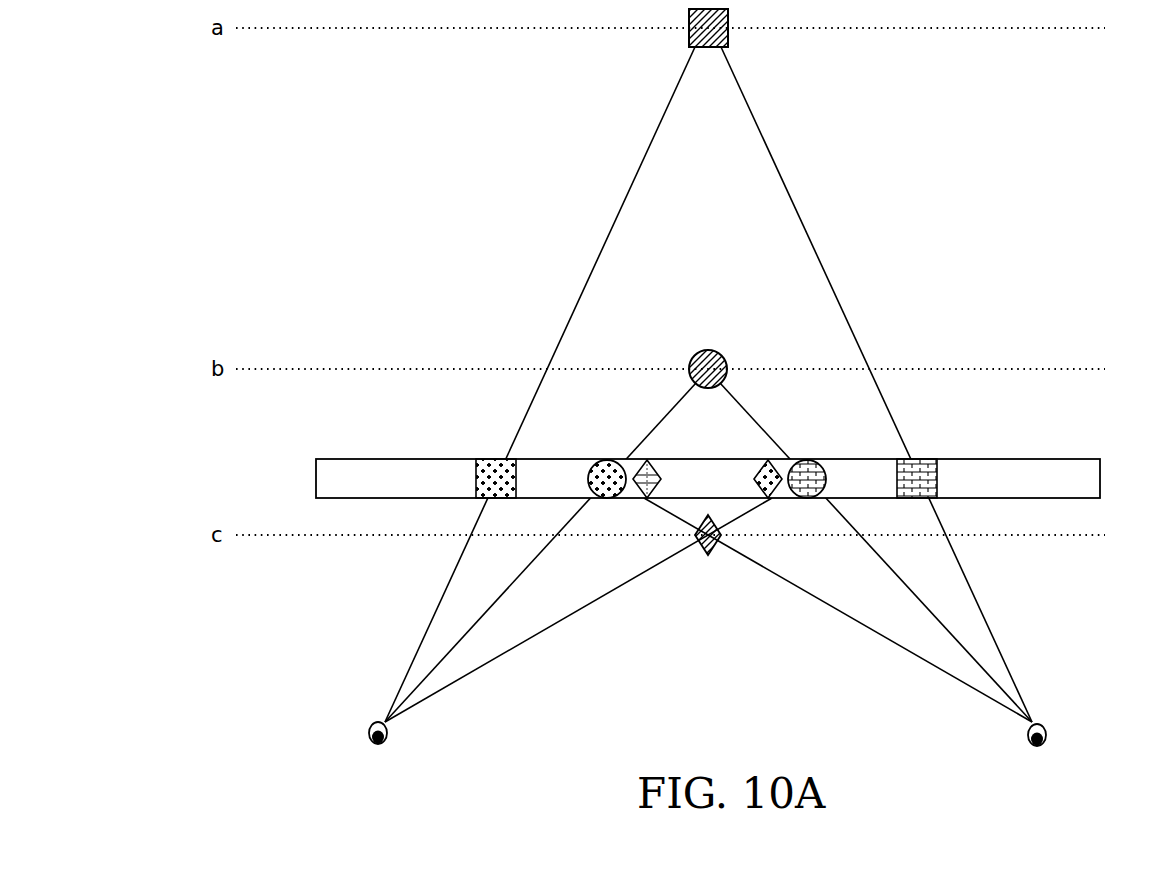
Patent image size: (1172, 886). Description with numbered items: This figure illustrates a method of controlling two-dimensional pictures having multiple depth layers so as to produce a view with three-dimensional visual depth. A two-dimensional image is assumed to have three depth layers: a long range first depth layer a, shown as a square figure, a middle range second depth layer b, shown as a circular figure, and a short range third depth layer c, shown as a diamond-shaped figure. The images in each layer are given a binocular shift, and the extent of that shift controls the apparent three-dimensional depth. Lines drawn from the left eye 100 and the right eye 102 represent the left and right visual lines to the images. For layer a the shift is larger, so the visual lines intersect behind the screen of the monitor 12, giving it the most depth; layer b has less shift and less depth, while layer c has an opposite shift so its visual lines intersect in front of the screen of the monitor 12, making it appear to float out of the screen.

The monitor 12 is at (1090, 472).
The left eye of viewer 100 is at (387, 738).
The right eye of viewer 102 is at (1046, 735).